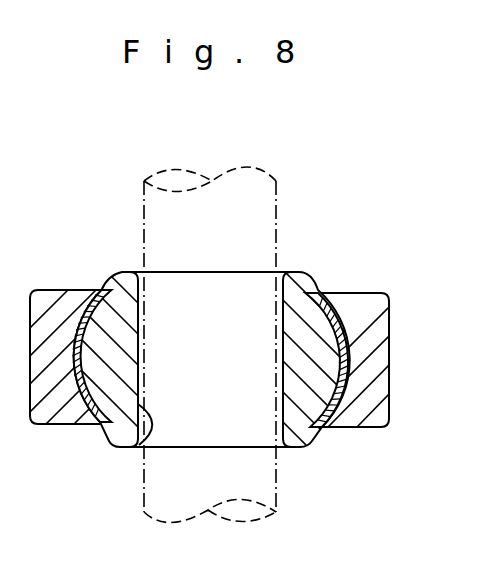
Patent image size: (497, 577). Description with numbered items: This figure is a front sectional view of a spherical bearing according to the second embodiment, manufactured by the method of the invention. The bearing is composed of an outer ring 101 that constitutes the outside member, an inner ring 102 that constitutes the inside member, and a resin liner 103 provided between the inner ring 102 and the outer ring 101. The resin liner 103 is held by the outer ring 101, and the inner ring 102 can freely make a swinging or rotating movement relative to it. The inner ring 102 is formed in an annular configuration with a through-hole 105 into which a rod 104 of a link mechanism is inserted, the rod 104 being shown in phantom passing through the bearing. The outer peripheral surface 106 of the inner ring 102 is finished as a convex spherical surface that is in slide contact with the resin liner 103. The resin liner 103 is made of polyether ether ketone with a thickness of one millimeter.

The outer ring 101 is at (383, 295).
The inner ring 102 is at (110, 275).
The resin liner 103 is at (69, 398).
The rod 104 is at (280, 182).
The through-hole 105 is at (138, 449).
The outer peripheral surface 106 is at (312, 292).